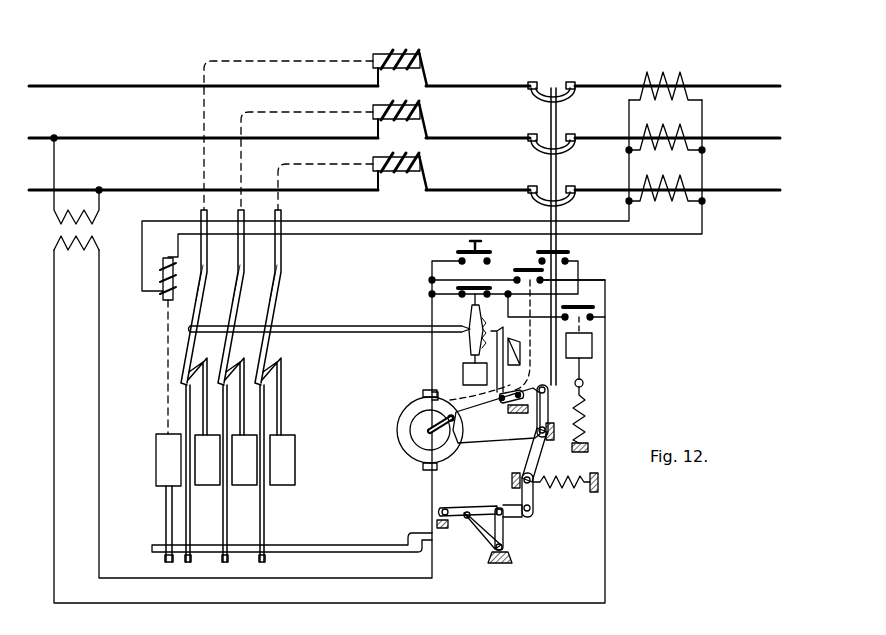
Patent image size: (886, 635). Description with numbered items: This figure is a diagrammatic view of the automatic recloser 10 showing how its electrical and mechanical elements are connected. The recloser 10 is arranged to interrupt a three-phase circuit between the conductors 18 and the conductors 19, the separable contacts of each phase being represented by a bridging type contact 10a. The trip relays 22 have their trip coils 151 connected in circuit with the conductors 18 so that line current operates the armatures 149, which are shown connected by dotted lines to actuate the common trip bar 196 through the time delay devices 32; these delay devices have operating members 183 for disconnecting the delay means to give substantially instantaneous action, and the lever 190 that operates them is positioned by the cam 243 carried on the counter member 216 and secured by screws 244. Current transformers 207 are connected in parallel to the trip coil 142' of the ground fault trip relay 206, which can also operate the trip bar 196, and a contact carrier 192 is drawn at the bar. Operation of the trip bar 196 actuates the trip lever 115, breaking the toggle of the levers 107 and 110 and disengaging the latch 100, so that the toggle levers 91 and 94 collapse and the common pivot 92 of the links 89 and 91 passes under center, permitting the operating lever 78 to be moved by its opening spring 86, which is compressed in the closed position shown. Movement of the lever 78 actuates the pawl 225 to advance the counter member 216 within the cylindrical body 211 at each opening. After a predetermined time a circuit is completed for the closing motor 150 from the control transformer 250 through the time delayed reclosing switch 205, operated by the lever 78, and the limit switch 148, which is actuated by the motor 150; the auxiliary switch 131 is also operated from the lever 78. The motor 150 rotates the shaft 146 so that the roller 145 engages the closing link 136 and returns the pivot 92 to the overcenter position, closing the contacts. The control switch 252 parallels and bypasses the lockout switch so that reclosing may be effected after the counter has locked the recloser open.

The trip relays 22 is at (452, 36).
The armatures 149 is at (374, 50).
The trip coils 151 is at (422, 62).
The conductors 18 is at (498, 82).
The bridging type contact 10a is at (536, 100).
The conductors 19 is at (598, 86).
The current transformers 207 is at (680, 80).
The auxiliary switch 131 is at (566, 254).
The control transformer 250 is at (328, 369).
The trip coil 142' is at (144, 346).
The operating members 183 is at (181, 383).
The time delay devices 32 is at (324, 471).
The ground fault trip relay 206 is at (158, 460).
The control member 190 is at (328, 328).
The common trip bar 196 is at (292, 538).
The contact carrier 192 is at (264, 558).
The trip lever 115 is at (417, 533).
The control switch 252 is at (458, 252).
The limit switch 148 is at (515, 271).
The screws 244 is at (432, 290).
The time delayed reclosing switch 205 is at (594, 311).
The counter member 216 is at (472, 305).
The cam member 243 is at (468, 333).
The cylindrical body member 211 is at (463, 369).
The pawl member 225 is at (506, 328).
The recloser 10 is at (654, 354).
The motor 150 is at (385, 449).
The shaft 146 is at (424, 428).
The roller 145 is at (455, 418).
The closing link 136 is at (496, 427).
The link 89 is at (553, 412).
The toggle link 91 is at (529, 440).
The common pivot 92 is at (546, 441).
The latch lever 94 is at (535, 495).
The latch 100 is at (503, 530).
The lever 110 is at (445, 505).
The lever 107 is at (477, 510).
The operating lever 78 is at (584, 383).
The spring 86 is at (585, 420).